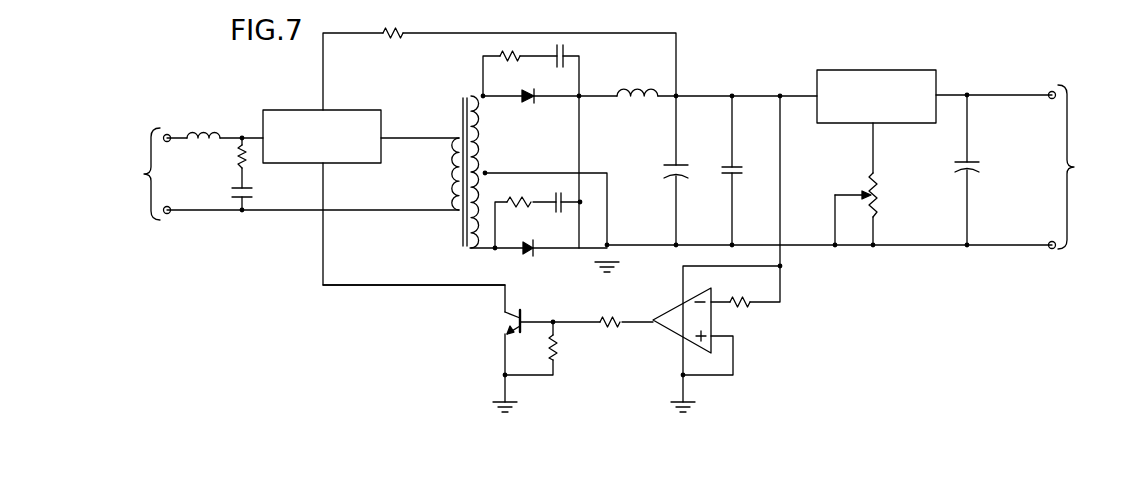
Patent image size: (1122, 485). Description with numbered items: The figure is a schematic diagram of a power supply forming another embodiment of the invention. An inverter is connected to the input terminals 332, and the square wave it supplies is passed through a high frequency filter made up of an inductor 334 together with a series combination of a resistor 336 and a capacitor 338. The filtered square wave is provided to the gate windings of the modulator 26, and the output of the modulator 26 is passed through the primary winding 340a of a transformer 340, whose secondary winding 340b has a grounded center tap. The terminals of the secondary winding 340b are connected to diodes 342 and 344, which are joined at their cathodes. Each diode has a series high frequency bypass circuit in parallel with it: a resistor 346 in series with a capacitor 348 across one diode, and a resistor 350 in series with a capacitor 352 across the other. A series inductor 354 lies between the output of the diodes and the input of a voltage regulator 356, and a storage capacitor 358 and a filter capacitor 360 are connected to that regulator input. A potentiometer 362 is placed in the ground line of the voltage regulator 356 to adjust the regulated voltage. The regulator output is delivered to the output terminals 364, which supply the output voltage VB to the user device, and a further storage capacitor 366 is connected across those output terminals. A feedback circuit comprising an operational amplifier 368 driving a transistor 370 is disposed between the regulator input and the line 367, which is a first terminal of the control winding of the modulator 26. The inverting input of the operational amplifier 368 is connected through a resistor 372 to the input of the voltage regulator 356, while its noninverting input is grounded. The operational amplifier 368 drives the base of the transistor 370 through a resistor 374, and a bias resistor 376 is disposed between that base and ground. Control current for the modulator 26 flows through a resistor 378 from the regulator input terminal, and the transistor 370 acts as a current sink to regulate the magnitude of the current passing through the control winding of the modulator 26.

The modulator 26 is at (293, 110).
The terminals 332 is at (139, 174).
The inductor 334 is at (206, 128).
The resistor 336 is at (237, 156).
The capacitor 338 is at (232, 192).
The transformer 340 is at (460, 98).
The primary winding 340a is at (449, 163).
The secondary winding 340b is at (486, 150).
The diode 342 is at (533, 92).
The diode 344 is at (524, 255).
The resistor 346 is at (508, 54).
The capacitor 348 is at (573, 51).
The resistor 350 is at (541, 194).
The capacitor 352 is at (544, 207).
The series inductor 354 is at (639, 88).
The voltage regulator 356 is at (898, 70).
The storage capacitor 358 is at (672, 166).
The filter capacitor 360 is at (735, 166).
The potentiometer 362 is at (878, 214).
The terminals 364 is at (1074, 167).
The storage capacitor 366 is at (964, 166).
The line 367 is at (380, 285).
The operational amplifier 368 is at (669, 332).
The transistor 370 is at (528, 317).
The resistor 372 is at (746, 306).
The resistor 374 is at (614, 317).
The bias resistor 376 is at (558, 348).
The resistor 378 is at (400, 39).